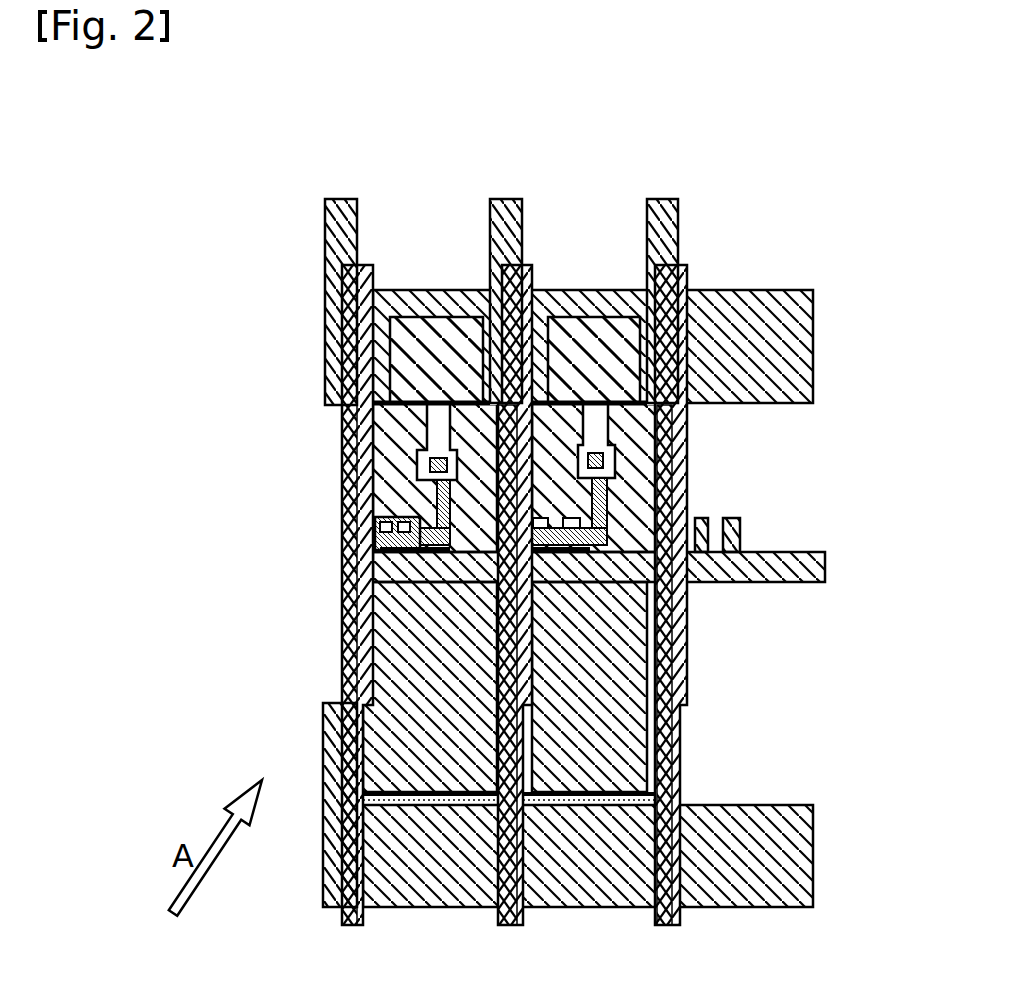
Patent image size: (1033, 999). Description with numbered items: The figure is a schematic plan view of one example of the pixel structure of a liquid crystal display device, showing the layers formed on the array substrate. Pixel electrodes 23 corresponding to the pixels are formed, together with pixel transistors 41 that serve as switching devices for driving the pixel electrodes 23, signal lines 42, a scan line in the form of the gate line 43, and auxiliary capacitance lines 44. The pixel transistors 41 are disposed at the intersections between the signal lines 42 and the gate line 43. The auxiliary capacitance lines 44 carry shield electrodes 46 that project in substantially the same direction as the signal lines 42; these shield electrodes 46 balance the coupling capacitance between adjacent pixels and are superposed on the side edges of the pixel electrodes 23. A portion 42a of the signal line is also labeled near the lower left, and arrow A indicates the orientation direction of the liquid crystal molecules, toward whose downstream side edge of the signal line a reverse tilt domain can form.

The pixel electrode 23 is at (392, 620).
The pixel transistor 41 is at (392, 522).
The signal line 42 is at (360, 265).
The data line portion 42a is at (323, 812).
The gate line 43 is at (825, 570).
The auxiliary capacitance line 44 is at (813, 350).
The shield electrode 46 is at (325, 218).